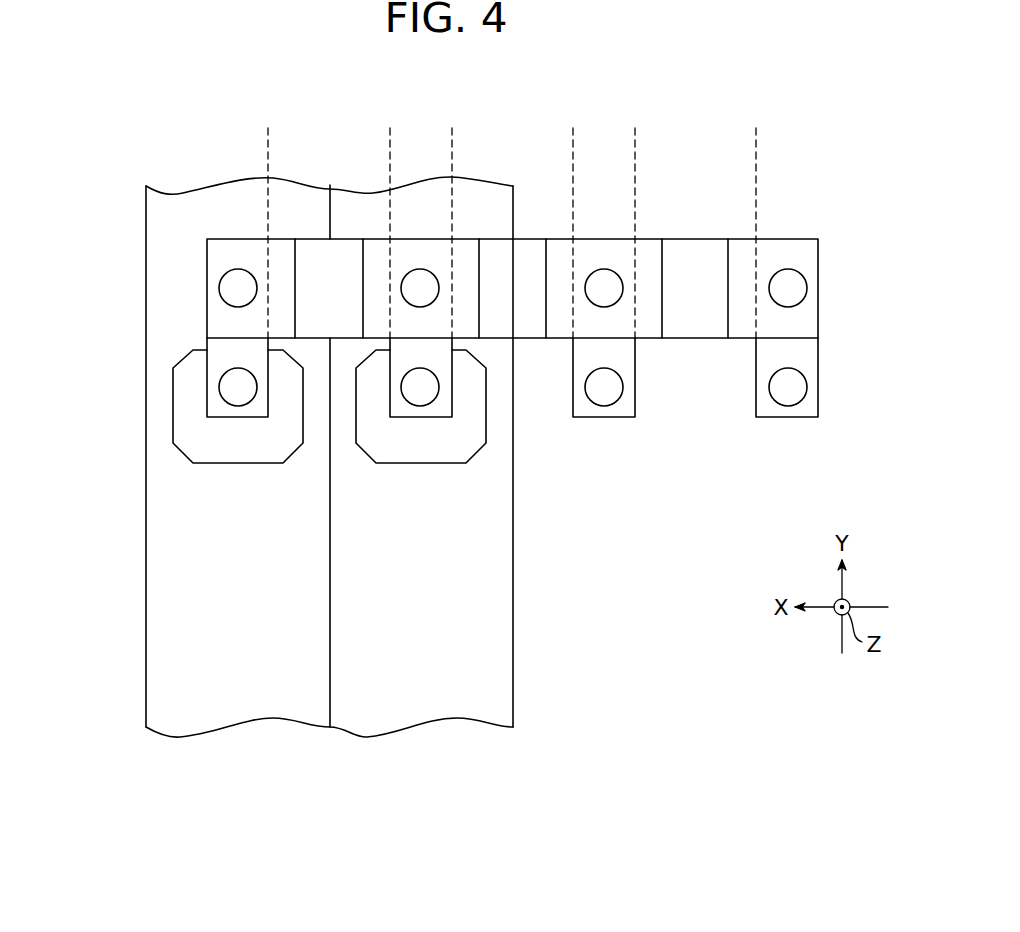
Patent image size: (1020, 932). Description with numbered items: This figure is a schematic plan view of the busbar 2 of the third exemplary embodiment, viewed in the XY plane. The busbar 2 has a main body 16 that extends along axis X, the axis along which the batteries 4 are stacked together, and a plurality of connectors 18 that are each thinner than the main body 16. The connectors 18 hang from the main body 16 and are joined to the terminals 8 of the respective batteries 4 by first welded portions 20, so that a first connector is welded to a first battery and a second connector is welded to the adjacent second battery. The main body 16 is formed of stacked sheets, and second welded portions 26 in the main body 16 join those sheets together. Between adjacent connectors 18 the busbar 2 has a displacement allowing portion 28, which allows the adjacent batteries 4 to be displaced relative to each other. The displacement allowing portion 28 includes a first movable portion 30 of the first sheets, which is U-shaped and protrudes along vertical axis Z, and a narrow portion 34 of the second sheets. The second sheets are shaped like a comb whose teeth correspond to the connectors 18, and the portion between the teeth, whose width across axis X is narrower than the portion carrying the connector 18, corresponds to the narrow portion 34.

The busbar 2 is at (806, 160).
The battery 4 is at (222, 713).
The terminal 8 is at (210, 463).
The main body 16 is at (802, 237).
The connector 18 is at (818, 360).
The first welded portion 20 is at (808, 387).
The second welded portion 26 is at (806, 280).
The displacement allowing portion 28 is at (273, 143).
The first movable portion 30 is at (729, 302).
The narrow portion 34 is at (661, 383).